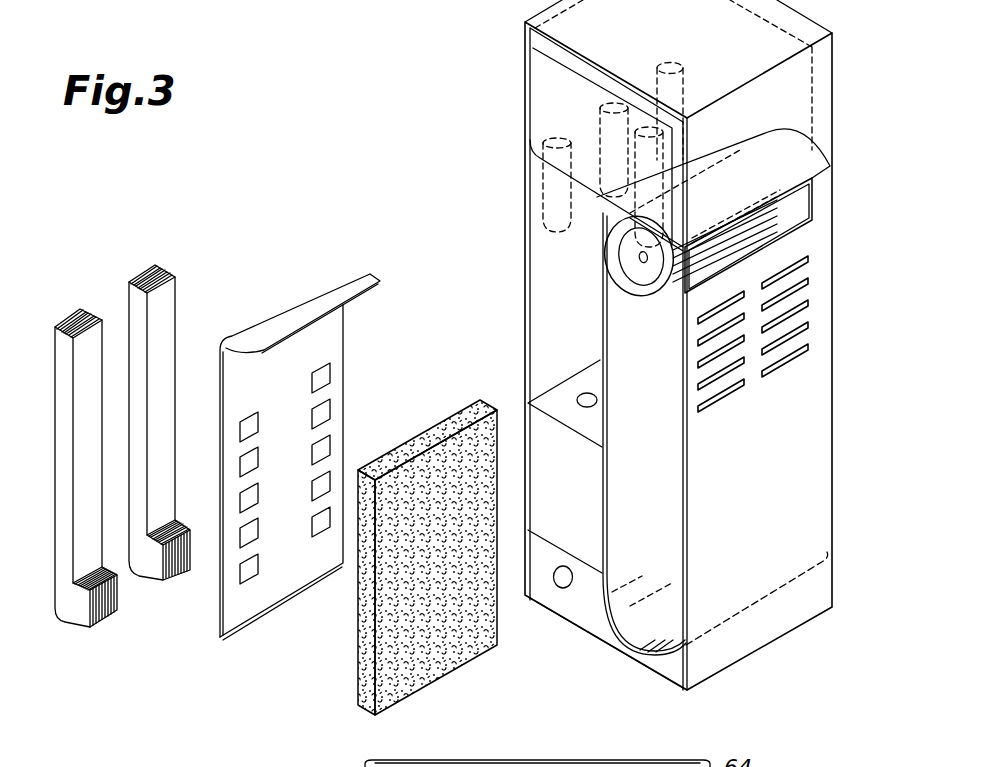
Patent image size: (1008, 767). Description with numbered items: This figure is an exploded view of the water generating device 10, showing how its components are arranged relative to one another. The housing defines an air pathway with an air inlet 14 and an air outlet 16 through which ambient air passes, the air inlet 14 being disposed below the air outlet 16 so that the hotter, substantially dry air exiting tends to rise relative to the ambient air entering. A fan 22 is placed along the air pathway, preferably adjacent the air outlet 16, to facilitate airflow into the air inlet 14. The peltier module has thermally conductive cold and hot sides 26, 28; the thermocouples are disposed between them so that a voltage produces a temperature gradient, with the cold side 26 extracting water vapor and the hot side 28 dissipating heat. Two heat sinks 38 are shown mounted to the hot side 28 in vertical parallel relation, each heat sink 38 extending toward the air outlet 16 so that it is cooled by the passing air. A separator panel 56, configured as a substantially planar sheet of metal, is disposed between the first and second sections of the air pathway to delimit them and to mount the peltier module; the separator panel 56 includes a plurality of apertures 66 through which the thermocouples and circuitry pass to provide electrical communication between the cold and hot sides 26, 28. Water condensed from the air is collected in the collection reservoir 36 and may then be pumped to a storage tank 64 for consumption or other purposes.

The water generating device 10 is at (60, 246).
The air inlet 14 is at (805, 268).
The air outlet 16 is at (800, 230).
The fan 22 is at (777, 212).
The cold side 26 is at (458, 415).
The hot side 28 is at (97, 382).
The collection reservoir 36 is at (623, 633).
The heat sink 38 is at (137, 278).
The separator panel 56 is at (353, 273).
The storage tank 64 is at (543, 82).
The apertures 66 is at (250, 430).